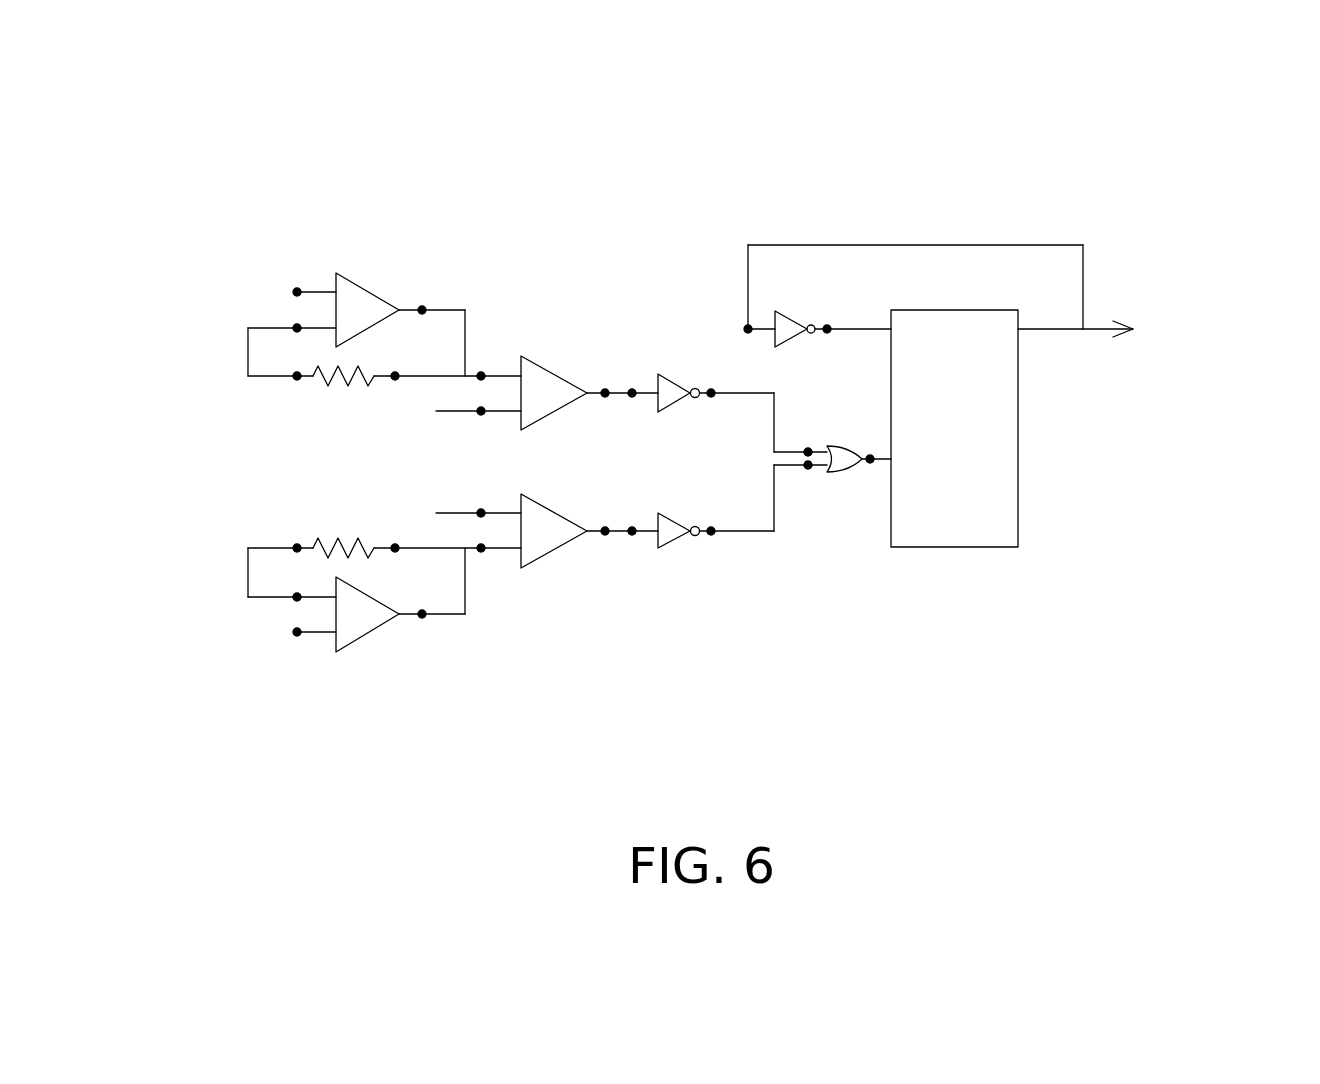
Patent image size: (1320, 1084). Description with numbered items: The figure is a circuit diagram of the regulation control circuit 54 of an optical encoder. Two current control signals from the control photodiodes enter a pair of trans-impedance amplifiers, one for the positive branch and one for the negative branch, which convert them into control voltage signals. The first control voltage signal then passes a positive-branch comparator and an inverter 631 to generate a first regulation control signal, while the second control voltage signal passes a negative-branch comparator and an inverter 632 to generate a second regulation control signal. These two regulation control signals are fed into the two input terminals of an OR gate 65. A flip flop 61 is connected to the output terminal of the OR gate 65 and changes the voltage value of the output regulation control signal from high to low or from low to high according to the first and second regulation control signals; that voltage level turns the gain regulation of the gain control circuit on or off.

The regulation control circuit 54 is at (235, 142).
The inverter 631 is at (668, 373).
The inverter 632 is at (670, 540).
The OR gate 65 is at (845, 470).
The flip flop 61 is at (950, 525).